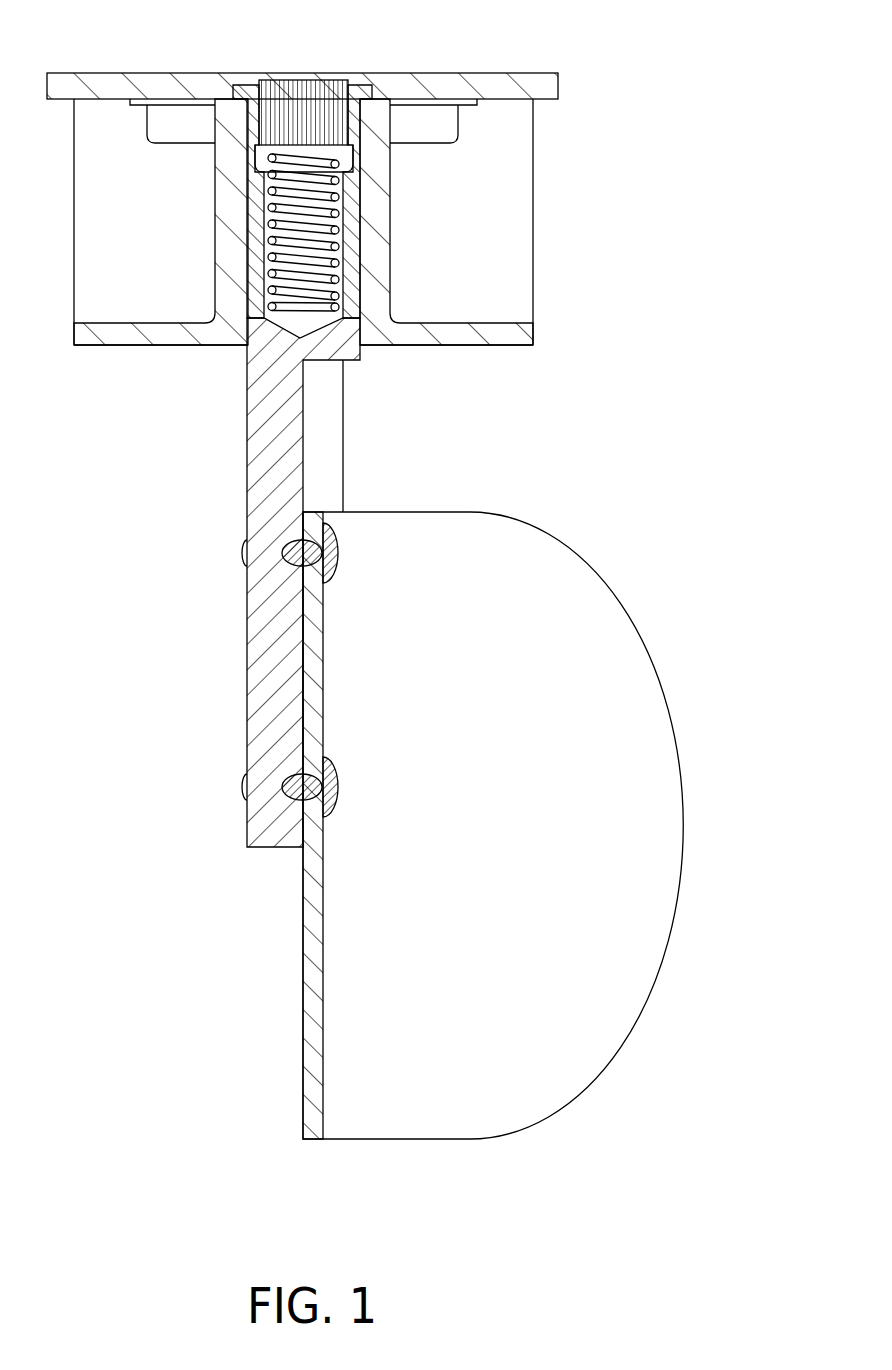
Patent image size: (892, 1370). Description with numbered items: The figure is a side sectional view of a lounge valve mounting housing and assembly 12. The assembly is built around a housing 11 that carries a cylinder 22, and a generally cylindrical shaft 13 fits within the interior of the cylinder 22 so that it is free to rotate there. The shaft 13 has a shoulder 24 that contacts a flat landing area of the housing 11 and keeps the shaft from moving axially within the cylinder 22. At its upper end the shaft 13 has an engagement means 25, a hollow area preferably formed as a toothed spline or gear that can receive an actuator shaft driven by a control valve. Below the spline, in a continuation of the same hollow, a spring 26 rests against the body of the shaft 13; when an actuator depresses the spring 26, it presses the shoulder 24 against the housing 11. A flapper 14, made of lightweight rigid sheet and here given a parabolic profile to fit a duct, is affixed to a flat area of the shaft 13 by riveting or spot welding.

The housing 11 is at (83, 345).
The valve assembly 12 is at (712, 308).
The shaft 13 is at (247, 635).
The flapper 14 is at (632, 624).
The cylinder 22 is at (392, 217).
The shoulder 24 is at (357, 78).
The engagement means 25 is at (287, 77).
The spring 26 is at (248, 232).